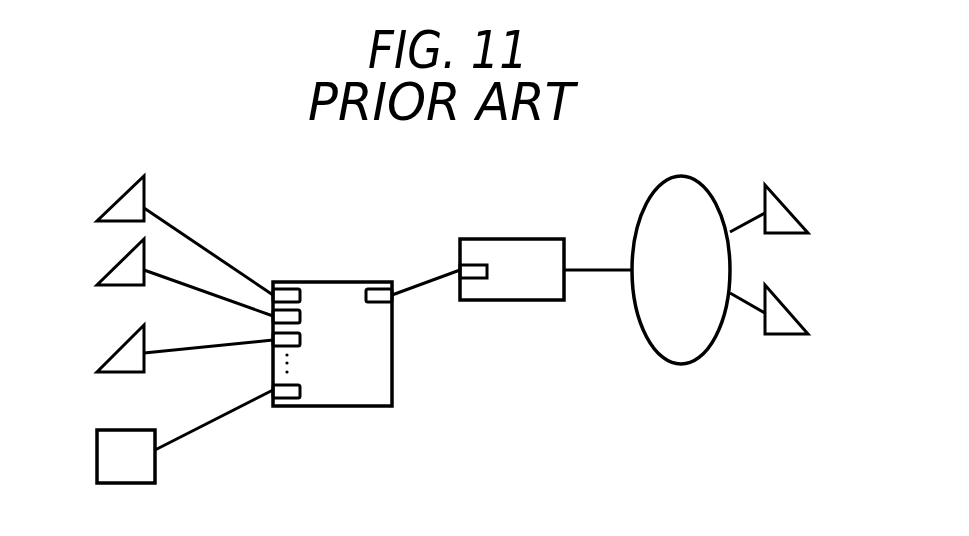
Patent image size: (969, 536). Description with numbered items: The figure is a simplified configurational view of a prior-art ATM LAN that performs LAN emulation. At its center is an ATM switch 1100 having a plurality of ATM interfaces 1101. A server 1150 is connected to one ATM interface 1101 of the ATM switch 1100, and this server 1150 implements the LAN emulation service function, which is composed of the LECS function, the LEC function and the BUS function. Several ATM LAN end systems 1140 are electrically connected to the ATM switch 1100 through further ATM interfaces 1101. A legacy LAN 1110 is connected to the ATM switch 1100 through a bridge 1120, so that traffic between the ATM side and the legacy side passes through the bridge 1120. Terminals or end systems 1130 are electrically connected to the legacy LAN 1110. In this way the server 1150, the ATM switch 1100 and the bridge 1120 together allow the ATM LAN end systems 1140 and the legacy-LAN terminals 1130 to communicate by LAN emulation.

The ATM switch 1100 is at (394, 390).
The ATM interface 1101 is at (300, 338).
The legacy LAN 1110 is at (708, 350).
The bridge 1120 is at (540, 239).
The terminals or end systems 1130 is at (802, 210).
The ATM LAN end systems 1140 is at (118, 200).
The server 1150 is at (97, 458).